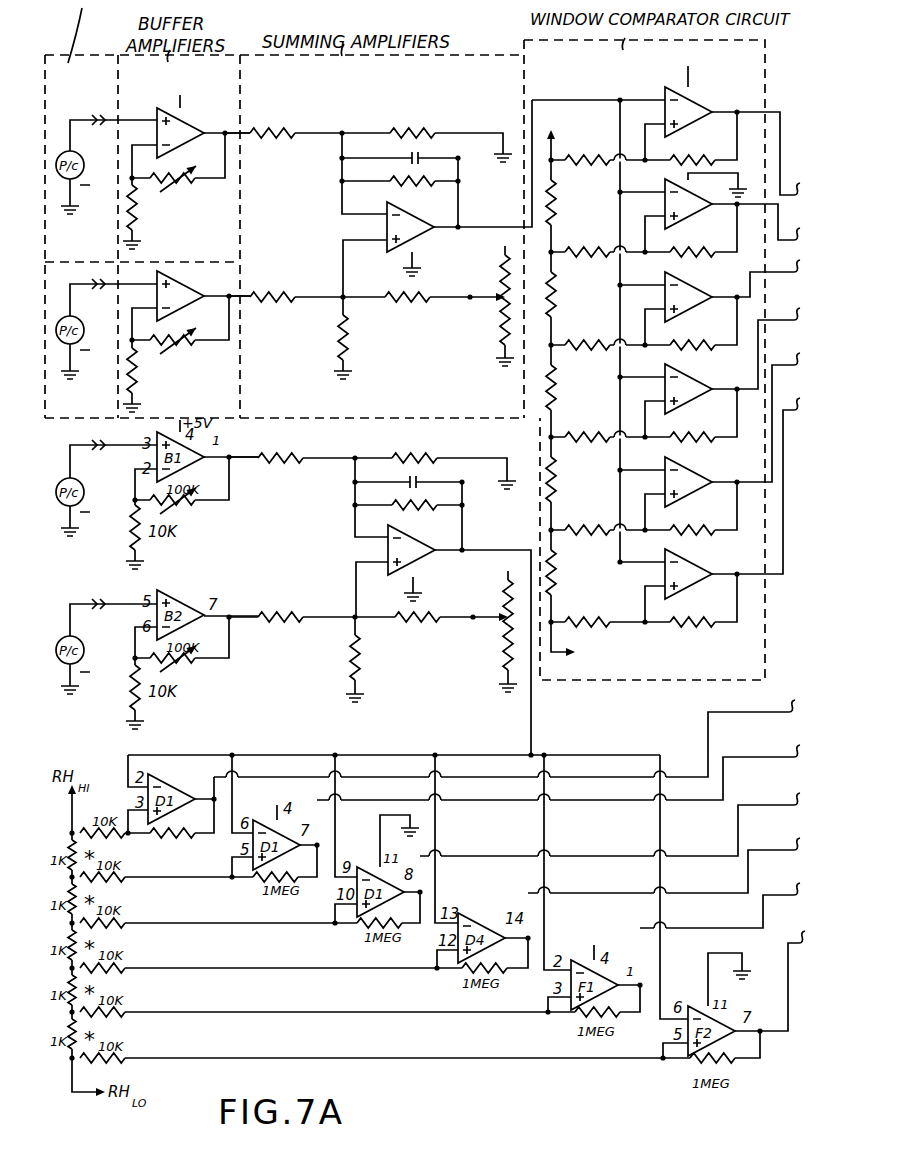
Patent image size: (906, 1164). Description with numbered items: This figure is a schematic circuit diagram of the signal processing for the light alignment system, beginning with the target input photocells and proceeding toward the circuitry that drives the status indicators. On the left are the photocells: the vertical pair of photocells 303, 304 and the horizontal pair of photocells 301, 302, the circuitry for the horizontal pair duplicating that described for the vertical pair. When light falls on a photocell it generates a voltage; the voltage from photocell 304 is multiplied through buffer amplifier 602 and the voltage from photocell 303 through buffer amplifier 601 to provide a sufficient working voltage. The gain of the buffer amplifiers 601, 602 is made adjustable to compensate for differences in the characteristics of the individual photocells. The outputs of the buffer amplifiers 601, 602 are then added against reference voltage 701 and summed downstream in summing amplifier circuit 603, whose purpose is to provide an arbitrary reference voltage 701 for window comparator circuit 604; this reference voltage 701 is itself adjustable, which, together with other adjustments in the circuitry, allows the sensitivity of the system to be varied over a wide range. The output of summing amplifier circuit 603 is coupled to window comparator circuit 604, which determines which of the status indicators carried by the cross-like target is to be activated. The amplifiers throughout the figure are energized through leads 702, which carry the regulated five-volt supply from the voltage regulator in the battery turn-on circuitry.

The photocell 304 is at (58, 160).
The photocell 303 is at (60, 345).
The photocell 302 is at (57, 506).
The photocell 301 is at (68, 635).
The buffer amplifier 602 is at (186, 171).
The buffer amplifier 601 is at (186, 341).
The summing amplifier circuit 603 is at (378, 377).
The window comparator circuit 604 is at (666, 366).
The lead line 702 is at (184, 96).
The reference voltage 701 is at (495, 308).